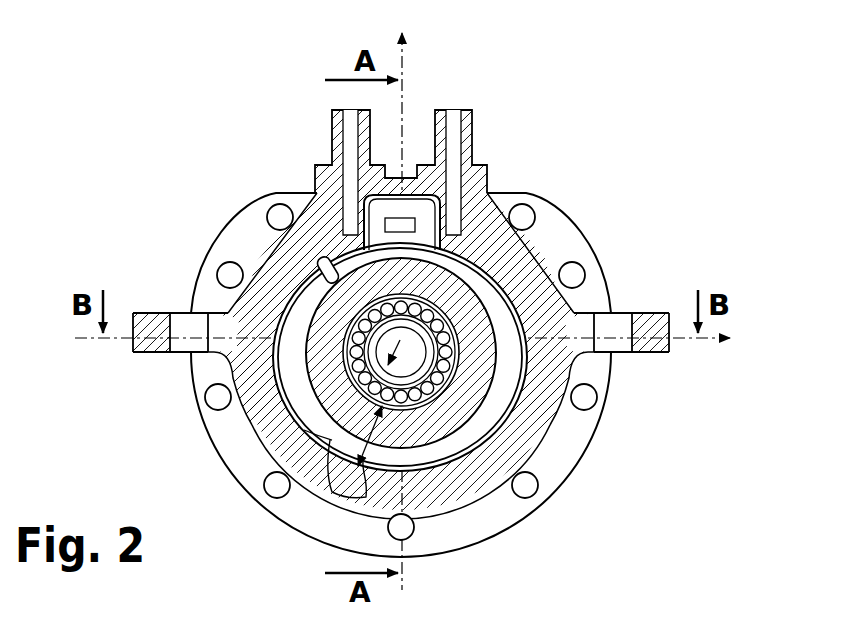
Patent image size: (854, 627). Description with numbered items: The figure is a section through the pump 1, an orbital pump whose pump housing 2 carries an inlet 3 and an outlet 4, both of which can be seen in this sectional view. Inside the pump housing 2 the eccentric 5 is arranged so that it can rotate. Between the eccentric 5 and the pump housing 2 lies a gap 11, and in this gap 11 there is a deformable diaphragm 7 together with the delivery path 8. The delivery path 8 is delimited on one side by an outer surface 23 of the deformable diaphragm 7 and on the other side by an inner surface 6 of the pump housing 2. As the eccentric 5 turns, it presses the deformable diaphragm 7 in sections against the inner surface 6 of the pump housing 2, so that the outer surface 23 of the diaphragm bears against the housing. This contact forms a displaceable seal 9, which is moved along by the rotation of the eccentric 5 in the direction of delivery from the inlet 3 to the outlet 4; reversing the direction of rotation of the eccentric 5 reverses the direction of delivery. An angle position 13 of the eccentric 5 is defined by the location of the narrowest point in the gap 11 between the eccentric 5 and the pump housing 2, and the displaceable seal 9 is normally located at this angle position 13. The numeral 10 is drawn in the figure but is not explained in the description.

The pump 1 is at (150, 108).
The pump housing 2 is at (540, 407).
The inlet 3 is at (457, 107).
The outlet 4 is at (347, 107).
The eccentric 5 is at (470, 415).
The inner surface 6 is at (303, 272).
The deformable diaphragm 7 is at (307, 262).
The delivery path 8 is at (337, 493).
The displaceable seal 9 is at (358, 470).
The shaft 10 is at (530, 368).
The gap 11 is at (335, 436).
The angle position 13 is at (388, 420).
The outer surface 23 is at (312, 282).